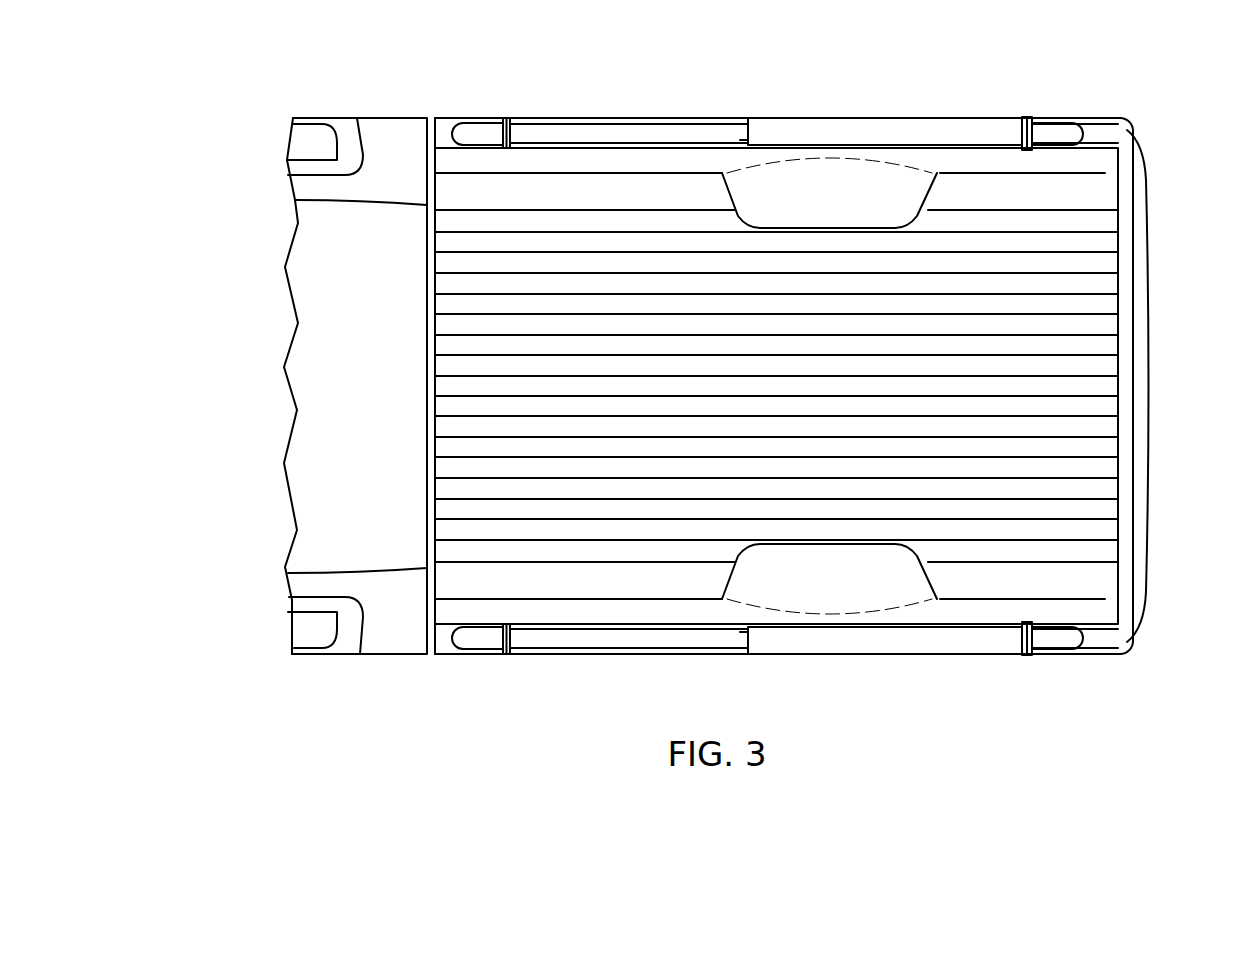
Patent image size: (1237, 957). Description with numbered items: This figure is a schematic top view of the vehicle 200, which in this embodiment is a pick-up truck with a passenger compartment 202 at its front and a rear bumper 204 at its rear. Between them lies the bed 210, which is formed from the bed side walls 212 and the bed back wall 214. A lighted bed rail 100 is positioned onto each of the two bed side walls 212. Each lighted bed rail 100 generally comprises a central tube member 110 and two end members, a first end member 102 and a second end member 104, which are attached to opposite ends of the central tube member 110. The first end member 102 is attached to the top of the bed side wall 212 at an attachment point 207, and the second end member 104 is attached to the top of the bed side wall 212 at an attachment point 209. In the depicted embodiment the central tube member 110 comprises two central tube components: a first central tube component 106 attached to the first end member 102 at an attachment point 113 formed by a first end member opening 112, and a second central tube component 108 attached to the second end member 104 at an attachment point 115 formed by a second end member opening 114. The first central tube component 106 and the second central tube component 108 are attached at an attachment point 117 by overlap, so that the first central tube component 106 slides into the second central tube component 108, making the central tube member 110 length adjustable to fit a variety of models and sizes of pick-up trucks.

The lighted bed rail 100 is at (941, 106).
The first end member 102 is at (492, 128).
The second end member 104 is at (1058, 126).
The first central tube component 106 is at (616, 119).
The second central tube component 108 is at (879, 118).
The central tube member 110 is at (791, 92).
The first end member opening 112 is at (506, 118).
The attachment point 113 is at (512, 125).
The second end member opening 114 is at (1026, 118).
The attachment point 115 is at (1022, 130).
The attachment point 117 is at (745, 141).
The vehicle 200 is at (303, 703).
The passenger compartment 202 is at (345, 656).
The rear bumper 204 is at (1150, 385).
The attachment point 207 is at (449, 124).
The attachment point 209 is at (1105, 120).
The bed 210 is at (827, 374).
The bed side wall 212 is at (693, 118).
The bed back wall 214 is at (1138, 340).